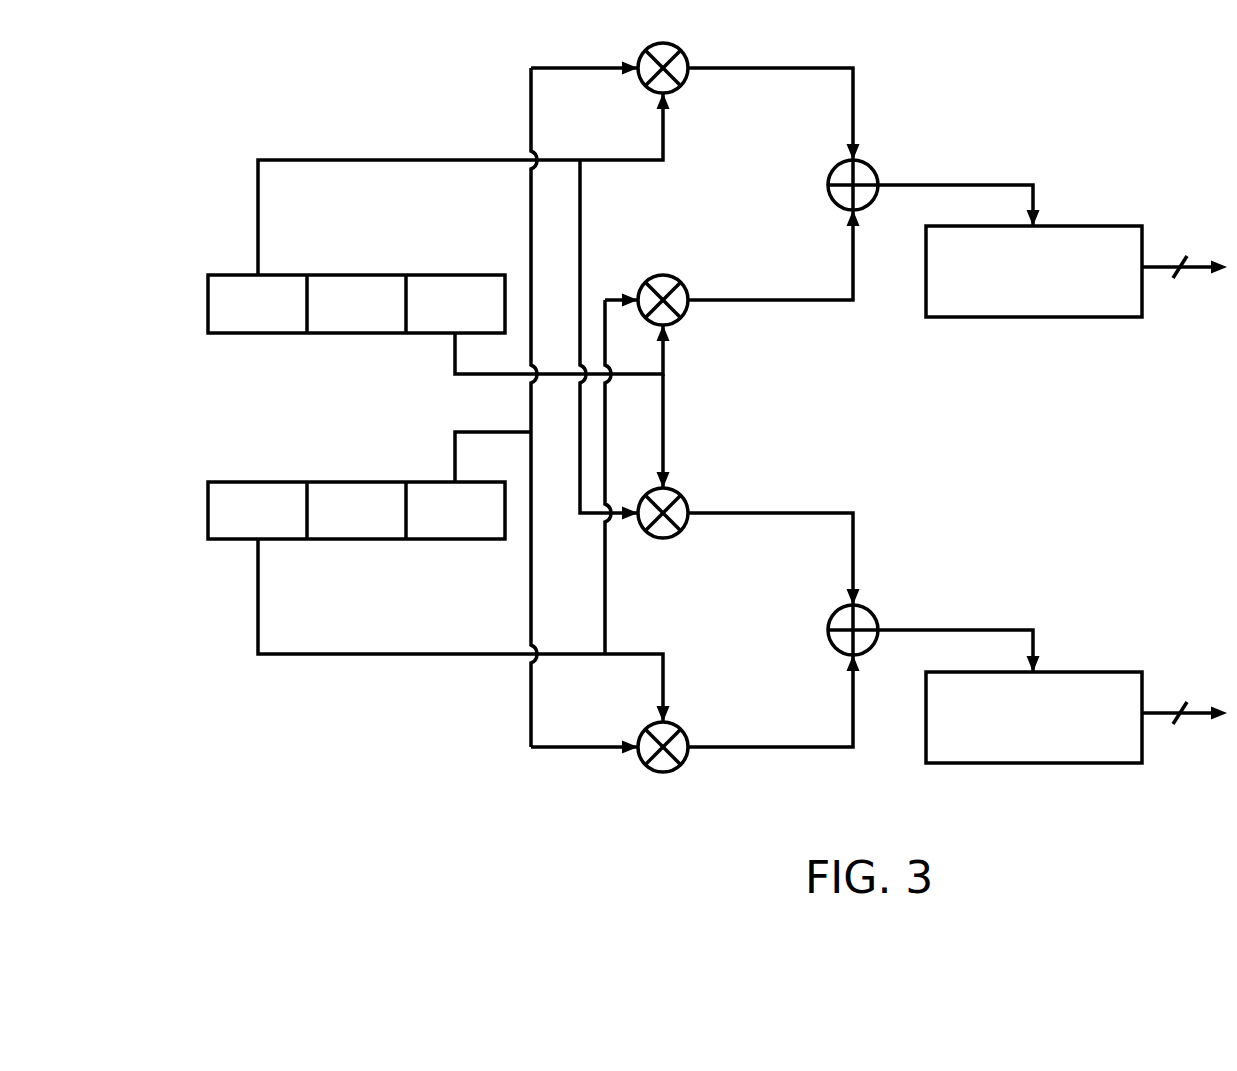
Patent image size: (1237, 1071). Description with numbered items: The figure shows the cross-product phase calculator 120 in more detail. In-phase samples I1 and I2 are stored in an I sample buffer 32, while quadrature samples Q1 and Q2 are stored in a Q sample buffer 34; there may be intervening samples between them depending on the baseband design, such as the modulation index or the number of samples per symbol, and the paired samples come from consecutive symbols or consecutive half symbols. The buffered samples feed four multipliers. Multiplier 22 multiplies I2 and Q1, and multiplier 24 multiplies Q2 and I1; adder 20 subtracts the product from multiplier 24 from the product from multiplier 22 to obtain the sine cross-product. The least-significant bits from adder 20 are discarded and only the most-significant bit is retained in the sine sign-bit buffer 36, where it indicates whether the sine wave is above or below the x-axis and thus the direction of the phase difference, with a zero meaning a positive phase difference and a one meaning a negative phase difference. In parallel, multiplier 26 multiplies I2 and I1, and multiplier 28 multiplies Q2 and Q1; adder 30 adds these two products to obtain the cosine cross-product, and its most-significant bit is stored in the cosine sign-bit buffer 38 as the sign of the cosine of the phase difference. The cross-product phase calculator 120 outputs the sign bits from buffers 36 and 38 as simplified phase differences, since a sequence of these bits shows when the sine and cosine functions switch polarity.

The adder 20 is at (866, 170).
The multiplier 22 is at (680, 52).
The multiplier 24 is at (680, 284).
The multiplier 26 is at (680, 497).
The multiplier 28 is at (680, 731).
The adder 30 is at (866, 615).
The I sample buffer 32 is at (357, 334).
The Q sample buffer 34 is at (357, 540).
The sine sign-bit buffer 36 is at (1112, 305).
The cosine sign-bit buffer 38 is at (1113, 750).
The cross-product phase calculator 120 is at (700, 460).